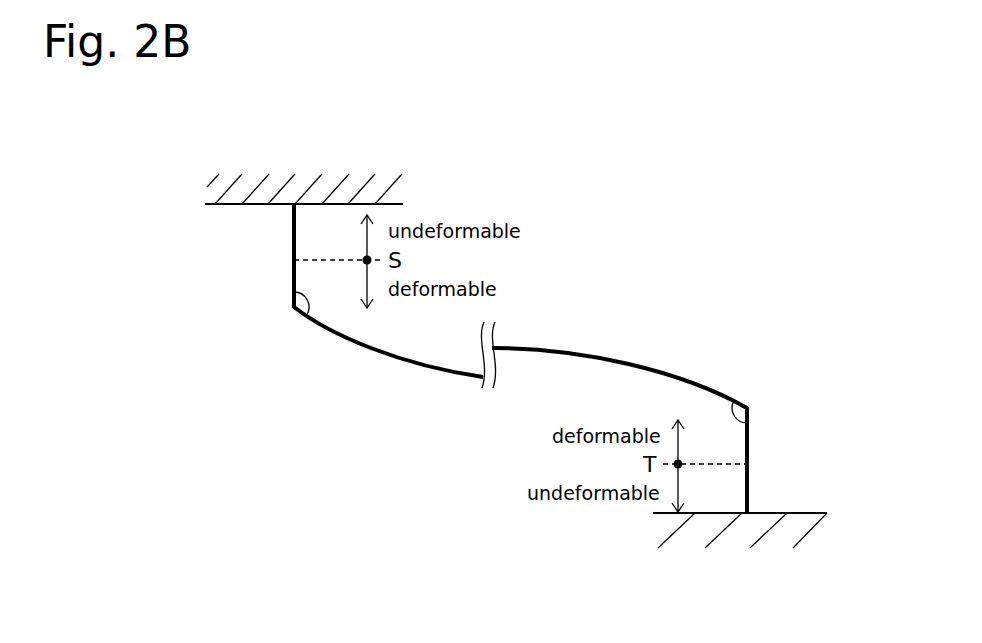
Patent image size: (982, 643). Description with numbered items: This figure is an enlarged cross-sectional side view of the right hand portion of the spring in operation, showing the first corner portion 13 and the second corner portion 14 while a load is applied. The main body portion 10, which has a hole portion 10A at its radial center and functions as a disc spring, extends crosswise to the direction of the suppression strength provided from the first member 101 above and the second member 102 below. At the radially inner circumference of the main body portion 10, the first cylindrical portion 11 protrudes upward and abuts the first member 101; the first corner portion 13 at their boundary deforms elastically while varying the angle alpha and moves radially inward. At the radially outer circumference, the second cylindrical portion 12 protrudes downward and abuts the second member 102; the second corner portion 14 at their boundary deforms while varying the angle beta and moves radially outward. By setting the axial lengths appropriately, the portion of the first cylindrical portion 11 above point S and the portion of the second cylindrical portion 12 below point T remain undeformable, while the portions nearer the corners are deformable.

The first member 101 is at (323, 192).
The hole portion 10A is at (263, 227).
The first cylindrical portion 11 is at (294, 248).
The first corner portion 13 is at (292, 306).
The main body portion 10 is at (370, 342).
The second corner portion 14 is at (740, 406).
The second cylindrical portion 12 is at (748, 487).
The second member 102 is at (742, 532).